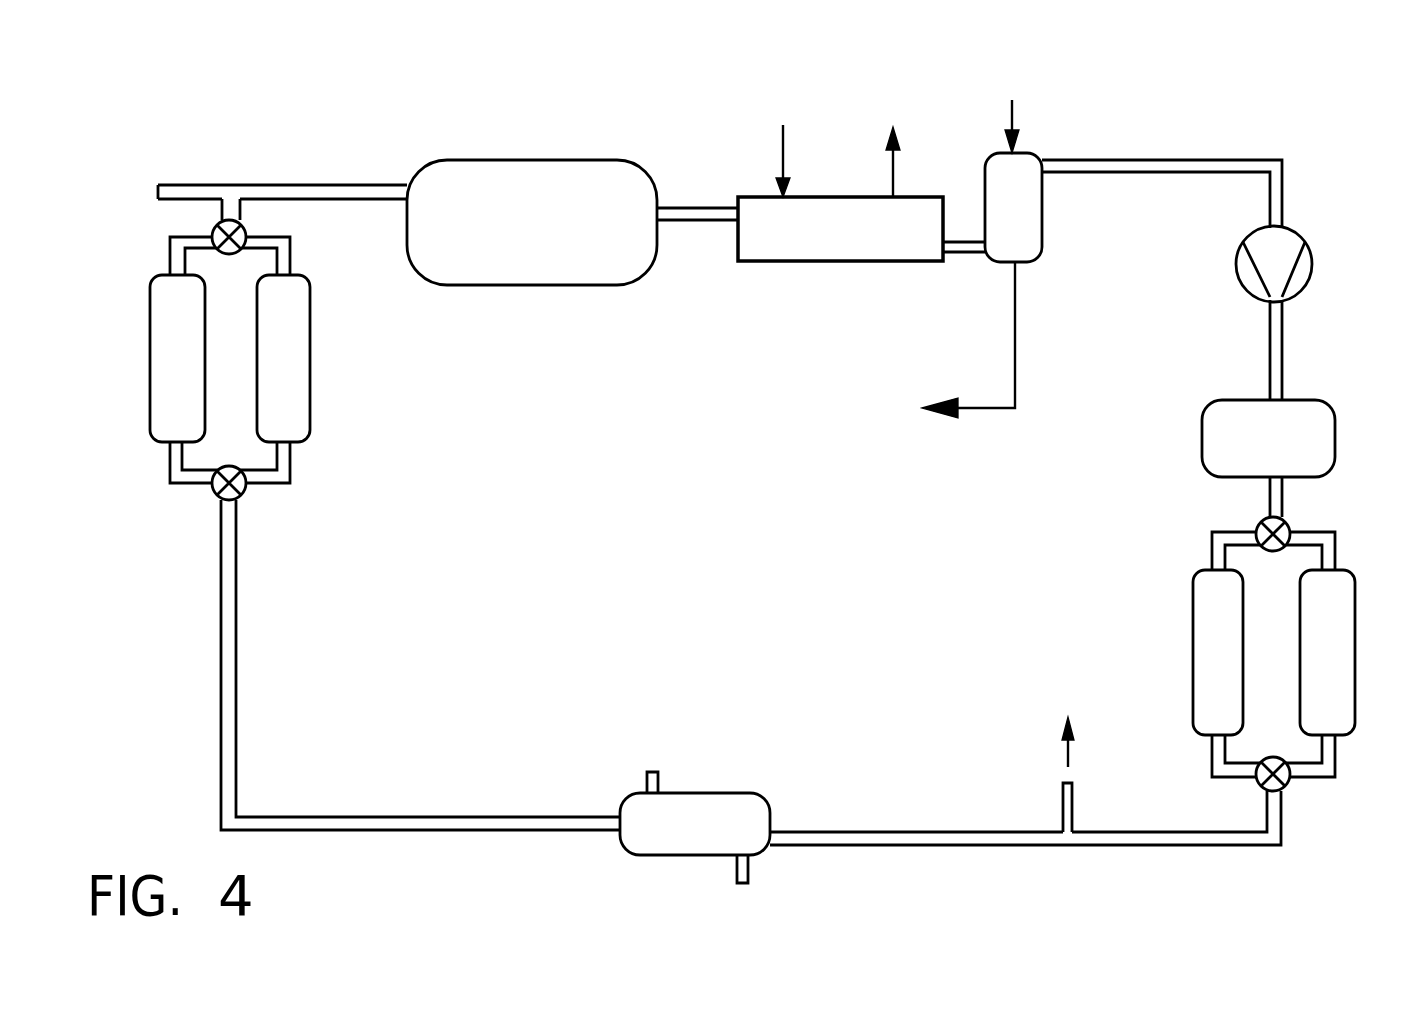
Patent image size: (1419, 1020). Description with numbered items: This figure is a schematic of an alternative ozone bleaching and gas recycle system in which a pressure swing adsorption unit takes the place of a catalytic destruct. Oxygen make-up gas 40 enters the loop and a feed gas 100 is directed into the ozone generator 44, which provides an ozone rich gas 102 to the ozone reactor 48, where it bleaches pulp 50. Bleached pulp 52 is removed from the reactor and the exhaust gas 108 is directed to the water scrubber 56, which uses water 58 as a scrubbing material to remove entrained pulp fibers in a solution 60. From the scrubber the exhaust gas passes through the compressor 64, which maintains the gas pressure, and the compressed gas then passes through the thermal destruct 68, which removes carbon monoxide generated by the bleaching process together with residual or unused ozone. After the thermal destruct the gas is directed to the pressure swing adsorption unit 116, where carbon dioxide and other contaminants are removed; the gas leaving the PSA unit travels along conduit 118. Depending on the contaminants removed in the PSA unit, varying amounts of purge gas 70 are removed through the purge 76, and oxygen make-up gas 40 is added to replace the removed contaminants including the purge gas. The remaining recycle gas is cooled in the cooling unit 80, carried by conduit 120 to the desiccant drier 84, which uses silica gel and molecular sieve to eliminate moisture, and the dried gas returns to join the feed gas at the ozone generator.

The oxygen make-up gas 40 is at (188, 193).
The feed gas 100 is at (290, 193).
The ozone generator 44 is at (518, 182).
The ozone rich gas 102 is at (677, 210).
The ozone reactor 48 is at (840, 250).
The pulp 50 is at (784, 154).
The bleached pulp 52 is at (896, 152).
The exhaust gas 108 is at (967, 253).
The water scrubber 56 is at (1027, 213).
The water 58 is at (1015, 113).
The solution 60 is at (970, 410).
The compressor 64 is at (1250, 272).
The thermal destruct 68 is at (1222, 437).
The pressure swing adsorption unit 116 is at (1364, 610).
The conduit 118 is at (1000, 836).
The purge 76 is at (1072, 812).
The purge gas 70 is at (1070, 757).
The cooling unit 80 is at (685, 815).
The conduit 120 is at (522, 818).
The desiccant drier 84 is at (183, 380).